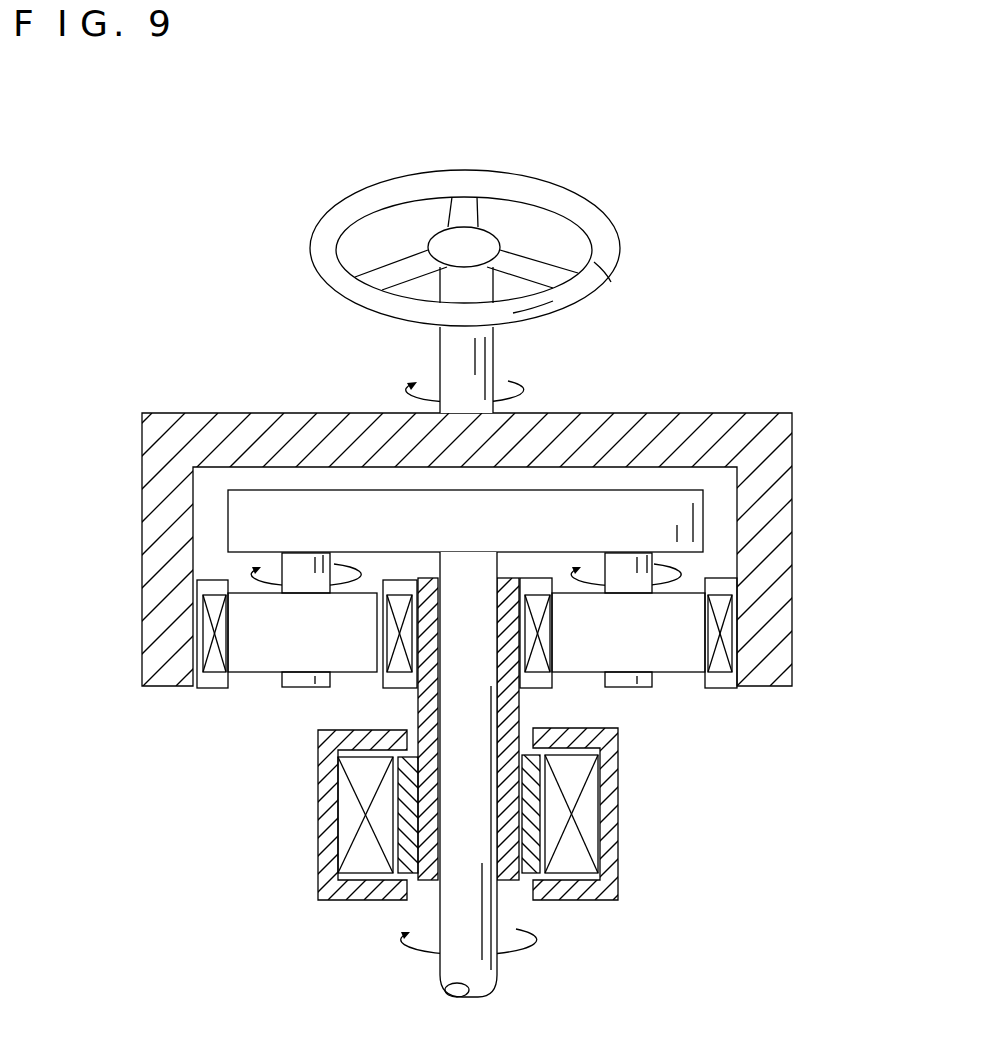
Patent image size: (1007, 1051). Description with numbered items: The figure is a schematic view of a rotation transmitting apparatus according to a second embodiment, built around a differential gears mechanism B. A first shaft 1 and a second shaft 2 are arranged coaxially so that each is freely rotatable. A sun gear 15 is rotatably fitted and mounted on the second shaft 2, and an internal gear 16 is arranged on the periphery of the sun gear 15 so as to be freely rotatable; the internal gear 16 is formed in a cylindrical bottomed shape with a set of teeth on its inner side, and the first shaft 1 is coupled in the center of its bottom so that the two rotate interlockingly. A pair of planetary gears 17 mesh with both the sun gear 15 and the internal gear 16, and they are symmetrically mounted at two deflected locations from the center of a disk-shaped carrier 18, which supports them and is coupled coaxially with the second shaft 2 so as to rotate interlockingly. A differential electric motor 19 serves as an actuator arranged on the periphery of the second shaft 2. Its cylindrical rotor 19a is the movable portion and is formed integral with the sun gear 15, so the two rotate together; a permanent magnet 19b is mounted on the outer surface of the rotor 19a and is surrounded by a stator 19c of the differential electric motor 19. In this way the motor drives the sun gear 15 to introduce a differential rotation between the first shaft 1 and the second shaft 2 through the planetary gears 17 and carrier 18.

The first shaft 1 is at (493, 351).
The second shaft 2 is at (497, 975).
The sun gear 15 is at (402, 580).
The internal gear 16 is at (783, 550).
The planetary gears 17 is at (257, 670).
The carrier 18 is at (608, 502).
The differential electric motor 19 is at (466, 841).
The rotor 19a is at (560, 766).
The permanent magnet 19b is at (533, 808).
The stator 19c is at (593, 838).
The differential gears mechanism B is at (782, 396).